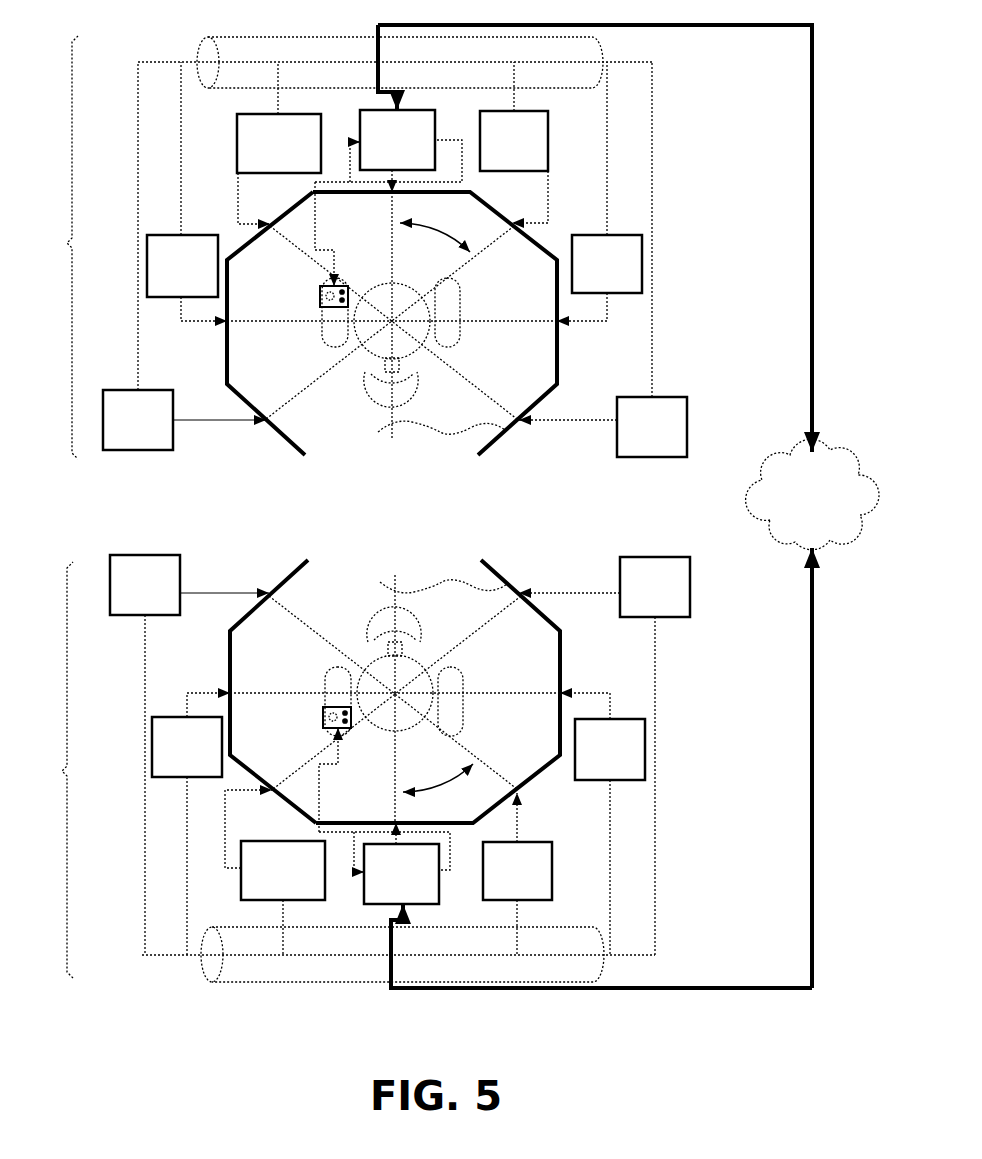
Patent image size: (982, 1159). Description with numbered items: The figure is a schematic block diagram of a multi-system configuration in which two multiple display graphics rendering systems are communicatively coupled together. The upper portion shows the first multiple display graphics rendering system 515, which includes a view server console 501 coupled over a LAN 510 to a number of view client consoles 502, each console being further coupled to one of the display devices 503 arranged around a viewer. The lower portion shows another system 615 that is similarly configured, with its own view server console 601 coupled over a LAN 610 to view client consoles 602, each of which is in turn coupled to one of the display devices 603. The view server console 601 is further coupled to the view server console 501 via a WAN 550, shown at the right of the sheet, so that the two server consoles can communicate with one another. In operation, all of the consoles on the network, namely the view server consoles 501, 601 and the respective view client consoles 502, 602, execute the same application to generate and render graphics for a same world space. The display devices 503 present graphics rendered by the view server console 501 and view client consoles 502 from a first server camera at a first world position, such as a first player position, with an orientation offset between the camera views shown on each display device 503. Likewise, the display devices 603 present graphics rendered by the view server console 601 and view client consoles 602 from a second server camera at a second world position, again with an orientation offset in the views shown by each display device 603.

The view server console 501 is at (416, 151).
The view client consoles 502 is at (261, 154).
The display devices 503 is at (323, 428).
The LAN 510 is at (423, 83).
The multiple display graphics rendering system 515 is at (54, 247).
The WAN 550 is at (796, 517).
The view server console 601 is at (420, 885).
The view client consoles 602 is at (265, 881).
The display devices 603 is at (327, 586).
The LAN 610 is at (418, 976).
The system 615 is at (49, 770).